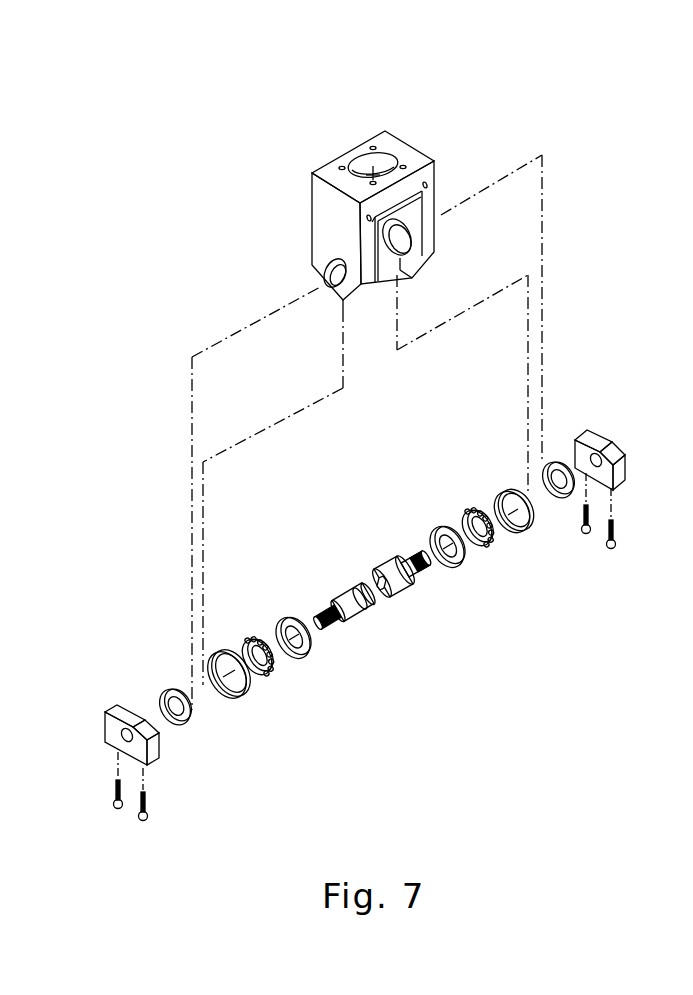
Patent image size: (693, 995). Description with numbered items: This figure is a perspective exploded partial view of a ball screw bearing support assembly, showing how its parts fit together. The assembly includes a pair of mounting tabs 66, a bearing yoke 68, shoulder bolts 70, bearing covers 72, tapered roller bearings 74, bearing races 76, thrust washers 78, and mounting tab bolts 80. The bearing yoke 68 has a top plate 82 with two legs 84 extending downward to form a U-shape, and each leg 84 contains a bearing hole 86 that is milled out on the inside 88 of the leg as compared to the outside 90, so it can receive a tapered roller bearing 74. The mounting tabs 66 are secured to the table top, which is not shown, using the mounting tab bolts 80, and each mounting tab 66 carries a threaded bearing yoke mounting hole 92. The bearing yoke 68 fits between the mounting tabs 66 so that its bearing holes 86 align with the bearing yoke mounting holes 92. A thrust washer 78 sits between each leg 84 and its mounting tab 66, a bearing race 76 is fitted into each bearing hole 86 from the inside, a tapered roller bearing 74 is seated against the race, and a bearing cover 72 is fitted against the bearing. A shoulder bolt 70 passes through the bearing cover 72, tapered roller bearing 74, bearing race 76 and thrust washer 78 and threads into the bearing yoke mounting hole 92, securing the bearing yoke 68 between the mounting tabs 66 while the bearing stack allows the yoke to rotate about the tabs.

The mounting tabs 66 is at (583, 445).
The bearing yoke 68 is at (325, 122).
The shoulder bolts 70 is at (397, 563).
The bearing covers 72 is at (437, 532).
The tapered roller bearings 74 is at (470, 517).
The bearing races 76 is at (510, 492).
The thrust washers 78 is at (562, 500).
The mounting tab bolts 80 is at (113, 803).
The top plate 82 is at (413, 158).
The legs 84 is at (428, 202).
The bearing holes 86 is at (434, 253).
The inside 88 is at (372, 222).
The outside 90 is at (323, 228).
The bearing yoke mounting hole 92 is at (598, 457).